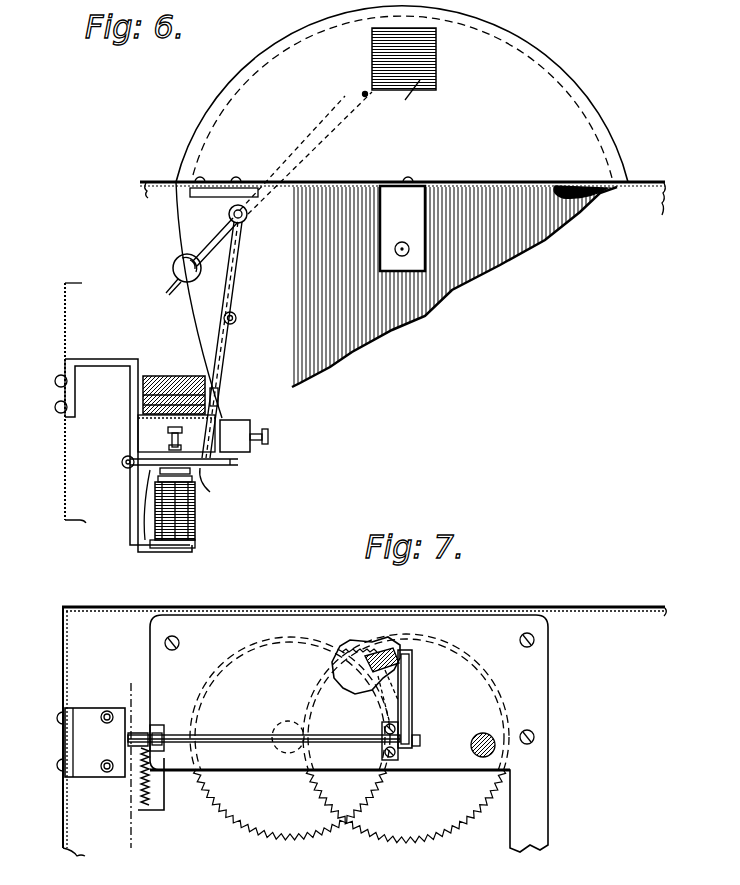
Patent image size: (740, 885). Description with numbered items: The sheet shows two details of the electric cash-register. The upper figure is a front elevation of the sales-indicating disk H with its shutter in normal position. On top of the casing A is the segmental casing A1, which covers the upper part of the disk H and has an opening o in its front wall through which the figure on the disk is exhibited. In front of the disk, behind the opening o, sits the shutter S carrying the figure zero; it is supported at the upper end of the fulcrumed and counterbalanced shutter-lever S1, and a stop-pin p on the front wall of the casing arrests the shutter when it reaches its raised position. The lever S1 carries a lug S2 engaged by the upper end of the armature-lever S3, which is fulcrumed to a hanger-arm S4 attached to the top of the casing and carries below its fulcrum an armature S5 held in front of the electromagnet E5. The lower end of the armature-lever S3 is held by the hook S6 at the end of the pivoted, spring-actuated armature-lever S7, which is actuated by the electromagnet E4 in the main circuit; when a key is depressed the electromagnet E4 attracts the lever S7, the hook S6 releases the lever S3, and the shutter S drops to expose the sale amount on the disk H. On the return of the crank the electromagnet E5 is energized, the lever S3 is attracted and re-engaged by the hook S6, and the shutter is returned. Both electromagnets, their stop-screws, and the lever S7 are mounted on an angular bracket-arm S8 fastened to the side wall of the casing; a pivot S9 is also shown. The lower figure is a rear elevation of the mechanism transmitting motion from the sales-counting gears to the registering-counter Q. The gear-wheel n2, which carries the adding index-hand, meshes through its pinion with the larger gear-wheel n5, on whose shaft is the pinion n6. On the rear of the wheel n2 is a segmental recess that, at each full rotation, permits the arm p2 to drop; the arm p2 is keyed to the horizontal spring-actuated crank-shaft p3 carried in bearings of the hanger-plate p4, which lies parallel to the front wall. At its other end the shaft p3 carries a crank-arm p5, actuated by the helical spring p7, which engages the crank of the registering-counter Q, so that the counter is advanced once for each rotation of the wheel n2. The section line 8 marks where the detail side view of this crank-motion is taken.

In FIG. 6, the casing A is at (52, 456).
In FIG. 7, the casing A is at (313, 607).
In FIG. 6, the segmental casing A1 is at (388, 212).
In FIG. 6, the sales-indicating disk H is at (185, 216).
In FIG. 6, the opening o is at (372, 48).
In FIG. 6, the shutter S is at (402, 97).
In FIG. 6, the stop-pin p is at (362, 94).
In FIG. 7, the stop-pin p is at (366, 680).
In FIG. 6, the shutter-lever S1 is at (305, 145).
In FIG. 6, the lug S2 is at (250, 220).
In FIG. 6, the armature-lever S3 is at (236, 270).
In FIG. 6, the hanger-arm S4 is at (238, 306).
In FIG. 6, the armature S5 is at (220, 397).
In FIG. 6, the hook S6 is at (222, 462).
In FIG. 6, the spring-actuated armature-lever S7 is at (216, 487).
In FIG. 6, the angular bracket-arm S8 is at (165, 556).
In FIG. 6, the pivot S9 is at (122, 463).
In FIG. 6, the electromagnet E4 is at (195, 525).
In FIG. 6, the electromagnet E5 is at (178, 378).
In FIG. 7, the hanger-plate p4 is at (349, 733).
In FIG. 7, the pinion n6 is at (291, 738).
In FIG. 7, the gear-wheel n2 is at (407, 738).
In FIG. 7, the larger gear-wheel n5 is at (281, 731).
In FIG. 7, the crank-shaft p3 is at (196, 738).
In FIG. 7, the registering-counter Q is at (95, 757).
In FIG. 7, the helical spring p7 is at (140, 795).
In FIG. 7, the crank-arm p5 is at (155, 724).
In FIG. 7, the section line 8 is at (127, 766).
In FIG. 7, the arm p2 is at (410, 666).